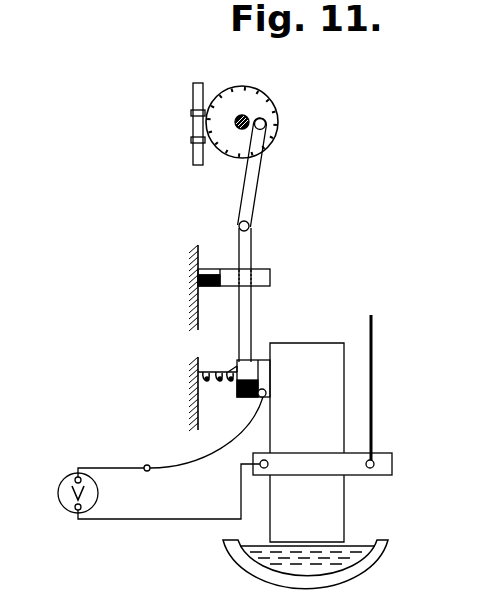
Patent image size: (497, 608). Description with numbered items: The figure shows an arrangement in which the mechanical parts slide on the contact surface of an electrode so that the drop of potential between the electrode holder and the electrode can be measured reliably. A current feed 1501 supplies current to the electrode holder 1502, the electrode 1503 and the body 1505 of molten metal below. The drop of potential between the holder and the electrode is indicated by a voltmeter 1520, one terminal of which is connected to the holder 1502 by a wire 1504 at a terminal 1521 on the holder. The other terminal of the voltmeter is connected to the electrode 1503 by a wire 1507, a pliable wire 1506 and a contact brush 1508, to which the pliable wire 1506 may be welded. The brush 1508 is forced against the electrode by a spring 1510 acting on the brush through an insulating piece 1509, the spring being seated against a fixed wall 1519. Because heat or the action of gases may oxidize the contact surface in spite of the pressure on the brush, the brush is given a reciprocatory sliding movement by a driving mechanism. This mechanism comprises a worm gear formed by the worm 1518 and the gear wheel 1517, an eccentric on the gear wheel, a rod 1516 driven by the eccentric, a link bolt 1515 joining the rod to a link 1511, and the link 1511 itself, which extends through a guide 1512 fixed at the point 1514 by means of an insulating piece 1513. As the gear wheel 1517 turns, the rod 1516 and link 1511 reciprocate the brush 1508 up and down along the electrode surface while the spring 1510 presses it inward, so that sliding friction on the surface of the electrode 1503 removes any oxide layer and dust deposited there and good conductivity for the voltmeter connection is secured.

The current feed 1501 is at (374, 390).
The electrode holder 1502 is at (322, 464).
The electrode 1503 is at (307, 442).
The wire 1504 is at (150, 520).
The body of molten metal 1505 is at (360, 542).
The pliable wire 1506 is at (192, 466).
The wire 1507 is at (110, 466).
The contact brush 1508 is at (268, 370).
The insulating piece 1509 is at (236, 366).
The spring 1510 is at (220, 386).
The link 1511 is at (252, 316).
The guide 1512 is at (271, 278).
The insulating piece 1513 is at (210, 270).
The fixing point 1514 is at (196, 288).
The link bolt 1515 is at (250, 227).
The rod 1516 is at (258, 143).
The worm gear wheel 1517 is at (277, 103).
The worm 1518 is at (193, 130).
The wall 1519 is at (196, 398).
The voltmeter 1520 is at (60, 493).
The terminal 1521 is at (268, 461).